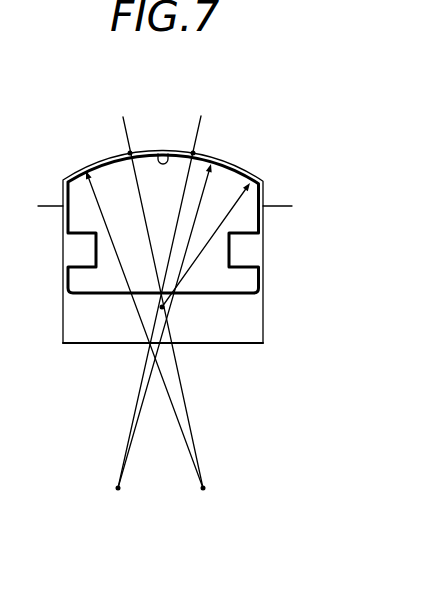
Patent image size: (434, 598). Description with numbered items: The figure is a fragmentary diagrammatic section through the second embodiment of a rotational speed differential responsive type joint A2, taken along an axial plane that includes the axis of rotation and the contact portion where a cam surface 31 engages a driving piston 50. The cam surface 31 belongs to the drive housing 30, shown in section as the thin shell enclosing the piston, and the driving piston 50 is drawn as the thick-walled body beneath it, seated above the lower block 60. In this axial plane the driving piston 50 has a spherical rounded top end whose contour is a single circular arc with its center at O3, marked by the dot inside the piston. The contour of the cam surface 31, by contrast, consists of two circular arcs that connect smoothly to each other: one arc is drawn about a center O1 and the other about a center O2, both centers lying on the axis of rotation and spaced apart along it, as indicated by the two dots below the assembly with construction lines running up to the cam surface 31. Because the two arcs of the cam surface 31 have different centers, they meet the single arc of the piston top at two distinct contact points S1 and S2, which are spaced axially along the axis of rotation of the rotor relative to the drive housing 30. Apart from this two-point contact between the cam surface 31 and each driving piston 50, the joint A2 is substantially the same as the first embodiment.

The rotational speed differential responsive type joint A2 is at (52, 96).
The drive housing 30 is at (261, 173).
The cam surface 31 is at (168, 153).
The driving piston 50 is at (250, 280).
The base block 60 is at (95, 332).
The contact point S1 is at (197, 153).
The contact point S2 is at (130, 153).
The center of circle O1 is at (161, 320).
The center of circle O2 is at (155, 320).
The center of arc of spherical rounded top end O3 is at (162, 307).